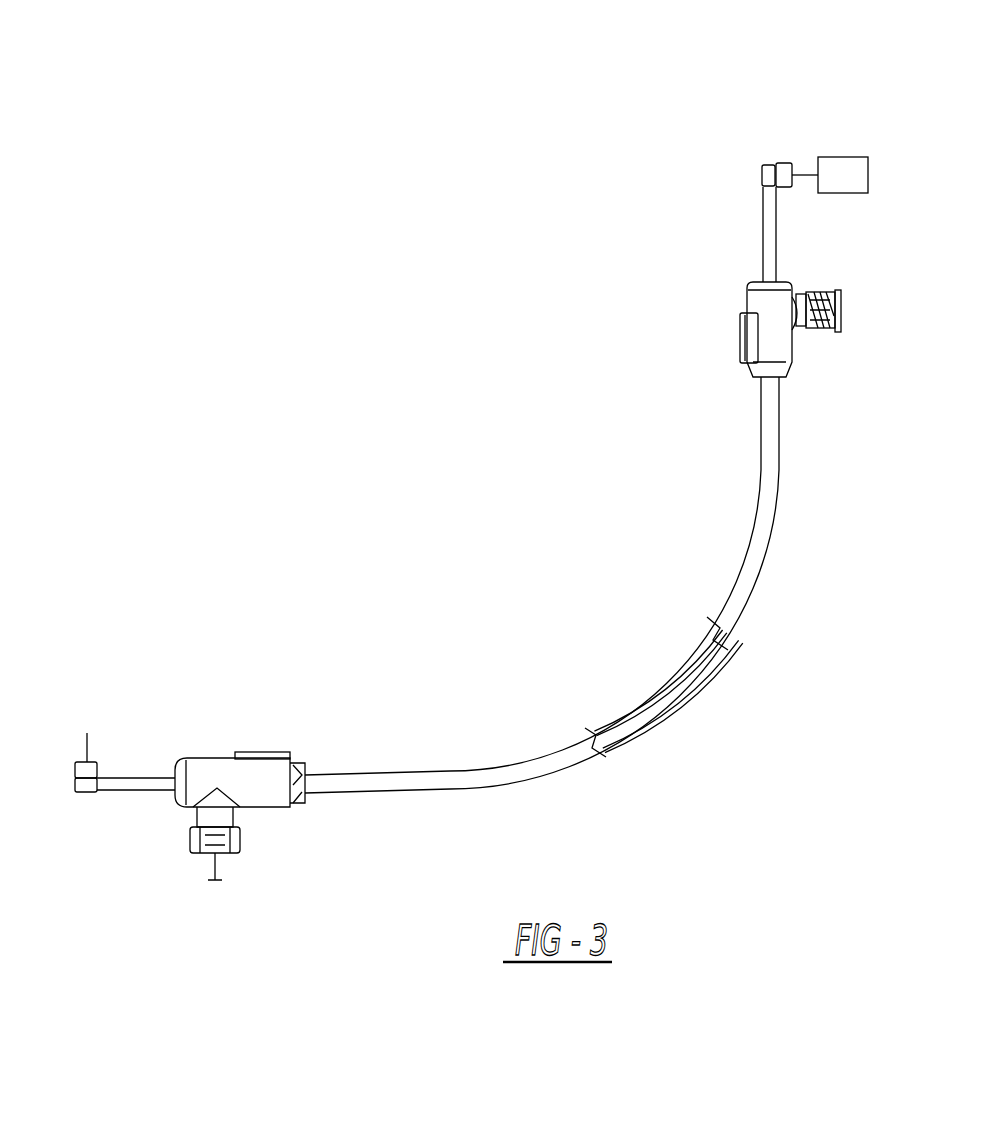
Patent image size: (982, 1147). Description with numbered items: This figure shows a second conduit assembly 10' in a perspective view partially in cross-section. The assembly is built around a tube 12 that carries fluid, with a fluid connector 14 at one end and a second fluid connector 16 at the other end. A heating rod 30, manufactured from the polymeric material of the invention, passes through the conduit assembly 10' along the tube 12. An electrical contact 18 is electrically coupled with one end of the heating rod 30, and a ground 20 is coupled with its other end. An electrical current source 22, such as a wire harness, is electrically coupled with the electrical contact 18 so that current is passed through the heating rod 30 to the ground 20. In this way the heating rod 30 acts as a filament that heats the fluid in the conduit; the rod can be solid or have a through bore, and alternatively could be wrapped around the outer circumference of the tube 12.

The second conduit assembly 10' is at (408, 390).
The tube 12 is at (618, 728).
The fluid connector 14 is at (747, 300).
The second fluid connector 16 is at (220, 757).
The electrical contact 18 is at (810, 158).
The ground 20 is at (87, 748).
The electrical current source 22 is at (840, 160).
The heating rod 30 is at (763, 213).